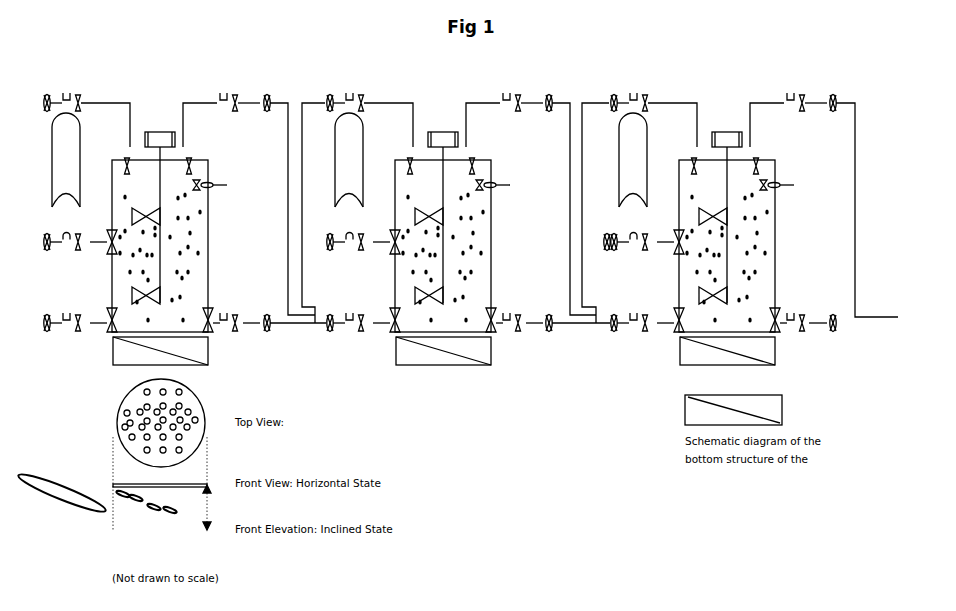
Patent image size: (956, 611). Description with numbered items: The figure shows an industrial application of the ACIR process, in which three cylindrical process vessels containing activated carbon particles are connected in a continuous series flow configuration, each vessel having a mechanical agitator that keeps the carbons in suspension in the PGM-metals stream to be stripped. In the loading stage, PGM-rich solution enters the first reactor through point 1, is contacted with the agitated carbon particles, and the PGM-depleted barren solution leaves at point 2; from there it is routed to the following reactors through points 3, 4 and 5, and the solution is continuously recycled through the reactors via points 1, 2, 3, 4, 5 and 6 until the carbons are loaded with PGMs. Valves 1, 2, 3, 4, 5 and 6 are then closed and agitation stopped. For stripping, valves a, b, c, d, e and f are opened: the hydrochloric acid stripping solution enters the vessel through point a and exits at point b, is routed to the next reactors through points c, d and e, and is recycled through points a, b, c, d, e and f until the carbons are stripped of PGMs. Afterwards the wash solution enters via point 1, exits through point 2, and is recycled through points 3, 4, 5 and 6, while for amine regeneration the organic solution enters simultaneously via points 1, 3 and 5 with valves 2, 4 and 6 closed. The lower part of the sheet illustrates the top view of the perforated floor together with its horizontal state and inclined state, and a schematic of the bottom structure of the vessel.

The stripping solution inlet point a is at (73, 90).
The PGM-rich solution inlet point 1 is at (73, 309).
The barren solution outlet point 2 is at (230, 90).
The stripping solution outlet point b is at (230, 309).
The stripping solution routing point c is at (356, 90).
The barren solution routing point 3 is at (356, 309).
The barren solution routing point 4 is at (513, 90).
The stripping solution routing point d is at (513, 309).
The stripping solution routing point e is at (640, 90).
The barren solution routing point 5 is at (640, 309).
The barren solution recycle point 6 is at (797, 90).
The stripping solution recycle point f is at (796, 309).